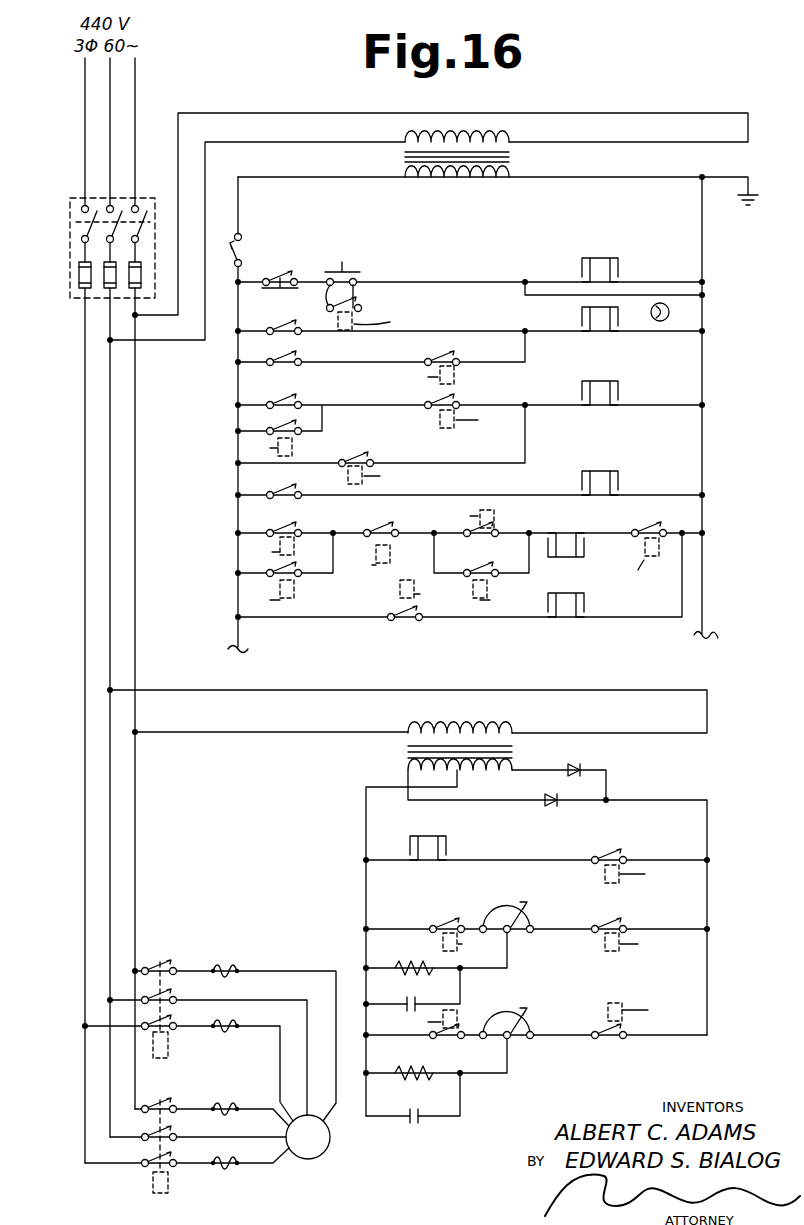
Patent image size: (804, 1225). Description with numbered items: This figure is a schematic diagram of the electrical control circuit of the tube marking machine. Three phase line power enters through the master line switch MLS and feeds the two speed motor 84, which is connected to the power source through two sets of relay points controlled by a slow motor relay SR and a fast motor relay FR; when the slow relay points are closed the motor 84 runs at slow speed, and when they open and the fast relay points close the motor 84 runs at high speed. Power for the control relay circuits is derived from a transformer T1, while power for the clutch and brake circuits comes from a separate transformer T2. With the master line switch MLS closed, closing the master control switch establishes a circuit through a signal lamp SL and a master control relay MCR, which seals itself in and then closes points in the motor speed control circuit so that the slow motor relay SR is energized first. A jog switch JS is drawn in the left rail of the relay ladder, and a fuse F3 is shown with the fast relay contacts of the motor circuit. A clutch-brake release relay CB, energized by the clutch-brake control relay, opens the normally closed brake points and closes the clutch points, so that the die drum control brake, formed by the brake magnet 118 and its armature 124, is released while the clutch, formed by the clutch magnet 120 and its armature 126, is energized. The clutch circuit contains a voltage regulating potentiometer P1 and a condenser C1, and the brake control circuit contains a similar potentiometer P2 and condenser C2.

The motor 84 is at (314, 1159).
The brake magnet 118 is at (414, 1076).
The clutch magnet 120 is at (400, 964).
The armature 124 is at (396, 1073).
The armature 126 is at (418, 975).
The condenser C1 is at (410, 996).
The condenser C2 is at (414, 1125).
The transformer T1 is at (513, 157).
The transformer T2 is at (514, 750).
The master line switch MLS is at (75, 246).
The jog switch JS is at (247, 250).
The voltage regulating potentiometer P1 is at (528, 916).
The potentiometer P2 is at (528, 1022).
The signal lamp SL is at (669, 314).
The master control relay MCR is at (600, 268).
The clutch-brake release relay CB is at (428, 844).
The slow motor relay SR is at (576, 606).
The fast motor relay FR is at (570, 545).
The relay coil F3 is at (168, 1186).